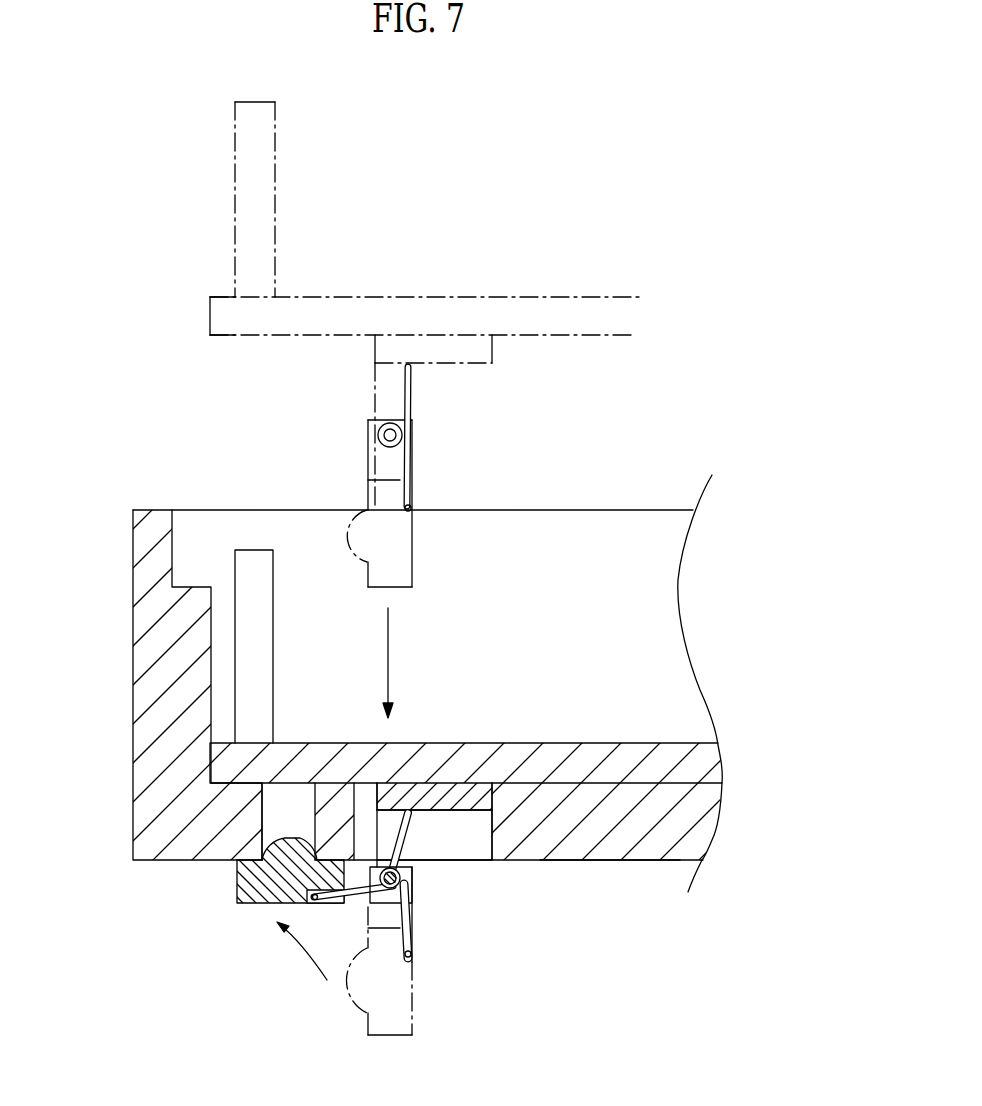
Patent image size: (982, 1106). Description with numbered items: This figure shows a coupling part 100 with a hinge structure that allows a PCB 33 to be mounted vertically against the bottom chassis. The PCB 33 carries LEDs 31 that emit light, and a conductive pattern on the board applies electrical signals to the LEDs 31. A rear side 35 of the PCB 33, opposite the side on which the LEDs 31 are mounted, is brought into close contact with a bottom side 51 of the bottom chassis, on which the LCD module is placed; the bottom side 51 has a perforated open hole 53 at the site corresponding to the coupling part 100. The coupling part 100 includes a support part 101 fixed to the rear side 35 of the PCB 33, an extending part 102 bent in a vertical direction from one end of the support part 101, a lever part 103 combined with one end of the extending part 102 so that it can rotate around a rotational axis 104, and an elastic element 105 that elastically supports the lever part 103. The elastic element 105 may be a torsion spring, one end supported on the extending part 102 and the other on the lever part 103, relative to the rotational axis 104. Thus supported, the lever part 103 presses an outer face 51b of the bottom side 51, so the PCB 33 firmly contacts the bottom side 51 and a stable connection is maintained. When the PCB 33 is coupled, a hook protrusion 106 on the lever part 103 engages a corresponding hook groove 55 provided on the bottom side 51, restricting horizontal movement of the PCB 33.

The LED 31 is at (255, 563).
The PCB 33 is at (707, 768).
The rear side of the PCB 35 is at (262, 828).
The bottom side 51 is at (707, 830).
The outer face of the bottom side 51b is at (615, 860).
The open hole 53 is at (483, 841).
The hook groove 55 is at (282, 782).
The coupling part 100 is at (395, 884).
The support part 101 is at (448, 797).
The extending part 102 is at (385, 832).
The lever part 103 is at (248, 897).
The rotational axis 104 is at (414, 914).
The elastic element 105 is at (345, 902).
The hook protrusion 106 is at (262, 840).